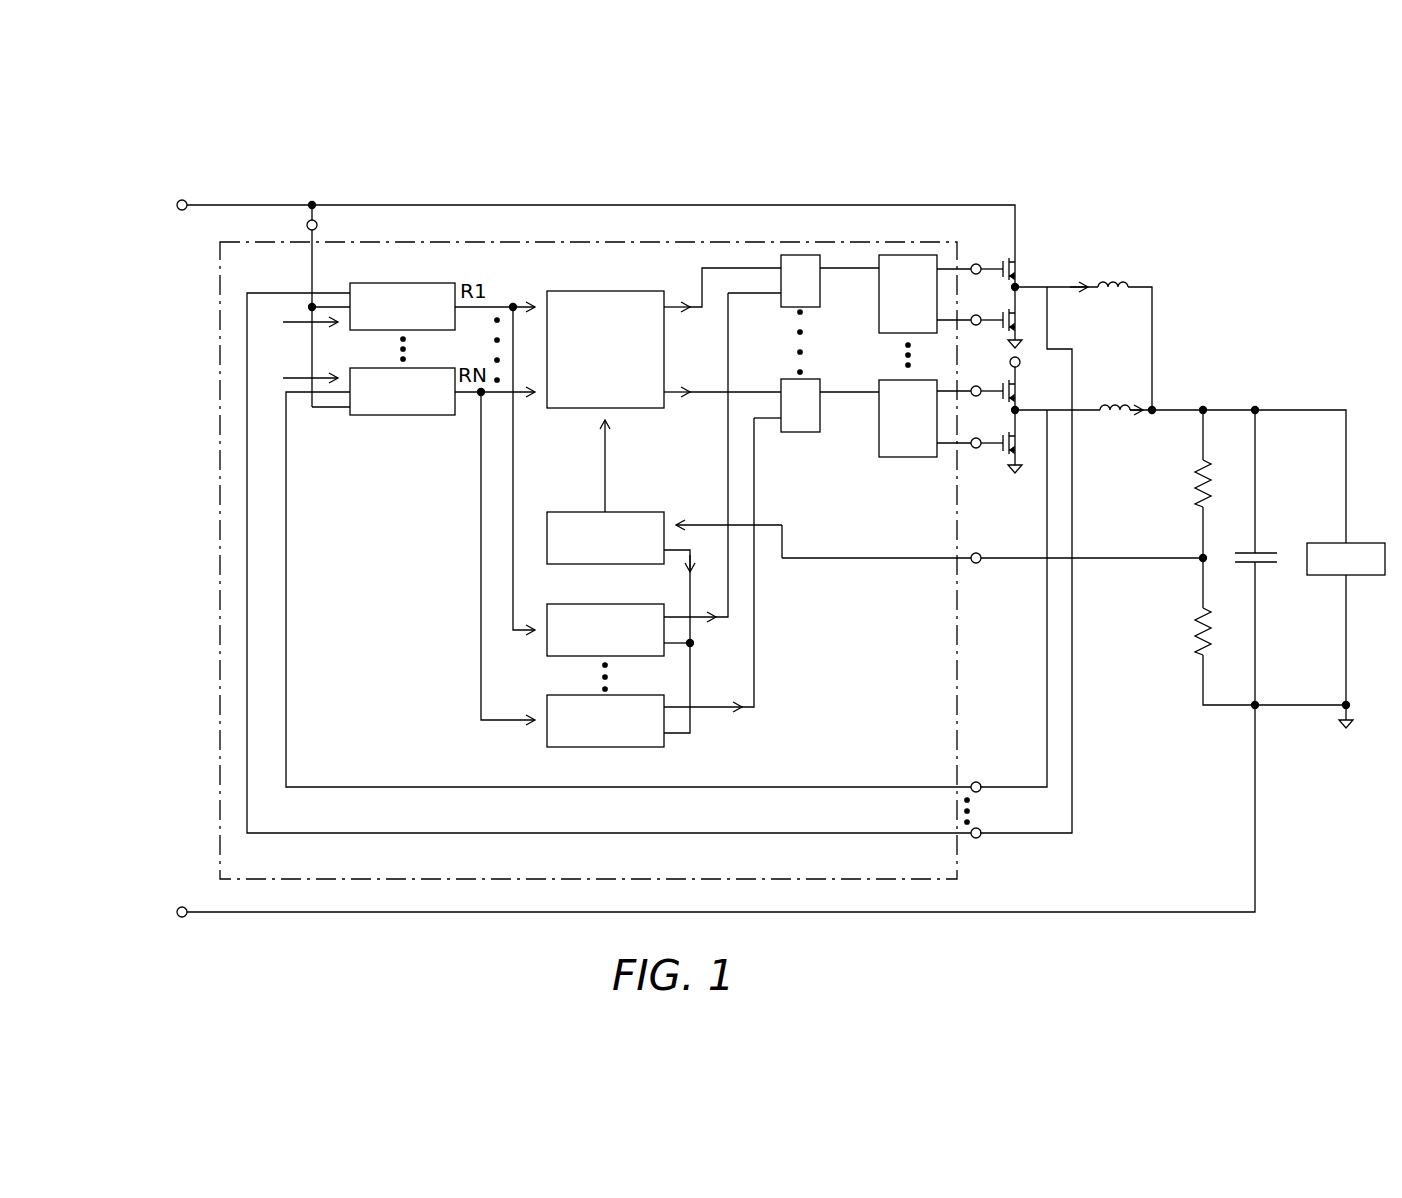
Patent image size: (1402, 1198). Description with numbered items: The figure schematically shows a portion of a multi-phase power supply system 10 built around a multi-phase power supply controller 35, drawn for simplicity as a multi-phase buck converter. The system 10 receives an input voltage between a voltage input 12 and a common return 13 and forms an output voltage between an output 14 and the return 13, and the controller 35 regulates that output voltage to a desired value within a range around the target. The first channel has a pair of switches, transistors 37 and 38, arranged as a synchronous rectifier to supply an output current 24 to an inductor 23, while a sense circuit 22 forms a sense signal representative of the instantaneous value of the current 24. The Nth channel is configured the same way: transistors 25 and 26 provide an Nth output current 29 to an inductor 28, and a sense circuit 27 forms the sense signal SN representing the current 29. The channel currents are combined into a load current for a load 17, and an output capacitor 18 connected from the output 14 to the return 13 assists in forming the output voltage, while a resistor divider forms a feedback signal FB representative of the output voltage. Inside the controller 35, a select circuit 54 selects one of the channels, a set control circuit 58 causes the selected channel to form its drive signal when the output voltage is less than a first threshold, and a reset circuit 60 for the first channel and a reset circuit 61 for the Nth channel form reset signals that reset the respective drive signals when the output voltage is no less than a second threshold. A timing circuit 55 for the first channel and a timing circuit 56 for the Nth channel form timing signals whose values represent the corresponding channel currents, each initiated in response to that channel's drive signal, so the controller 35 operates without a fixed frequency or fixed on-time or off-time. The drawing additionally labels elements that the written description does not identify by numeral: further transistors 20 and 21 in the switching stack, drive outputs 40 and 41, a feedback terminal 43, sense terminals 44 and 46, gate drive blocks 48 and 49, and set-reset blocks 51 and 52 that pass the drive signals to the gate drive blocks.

The multi-phase power supply system 10 is at (1141, 971).
The voltage input 12 is at (181, 211).
The common return 13 is at (182, 906).
The output 14 is at (1307, 410).
The load 17 is at (1332, 575).
The output capacitor 18 is at (1262, 546).
The high-side transistor 20 is at (1012, 262).
The low-side transistor 21 is at (1017, 329).
The sense circuit 22 is at (1047, 285).
The inductor 23 is at (1118, 274).
The output current 24 is at (1086, 293).
The transistor 25 is at (1017, 392).
The transistor 26 is at (1010, 441).
The sense circuit 27 is at (1047, 410).
The inductor 28 is at (1120, 400).
The Nth output current 29 is at (1137, 415).
The multi-phase power supply controller 35 is at (957, 853).
The transistor 37 is at (976, 264).
The transistor 38 is at (976, 315).
The drive output 40 is at (974, 387).
The drive output 41 is at (976, 448).
The feedback input 43 is at (978, 552).
The sense input 44 is at (978, 782).
The sense input 46 is at (980, 830).
The gate drive circuit 48 is at (879, 287).
The gate drive circuit 49 is at (879, 430).
The latch 51 is at (785, 307).
The latch 52 is at (785, 379).
The select circuit 54 is at (595, 291).
The timing circuit 55 is at (388, 283).
The timing circuit 56 is at (390, 415).
The set control circuit 58 is at (628, 512).
The reset circuit 60 is at (613, 604).
The reset circuit 61 is at (556, 695).